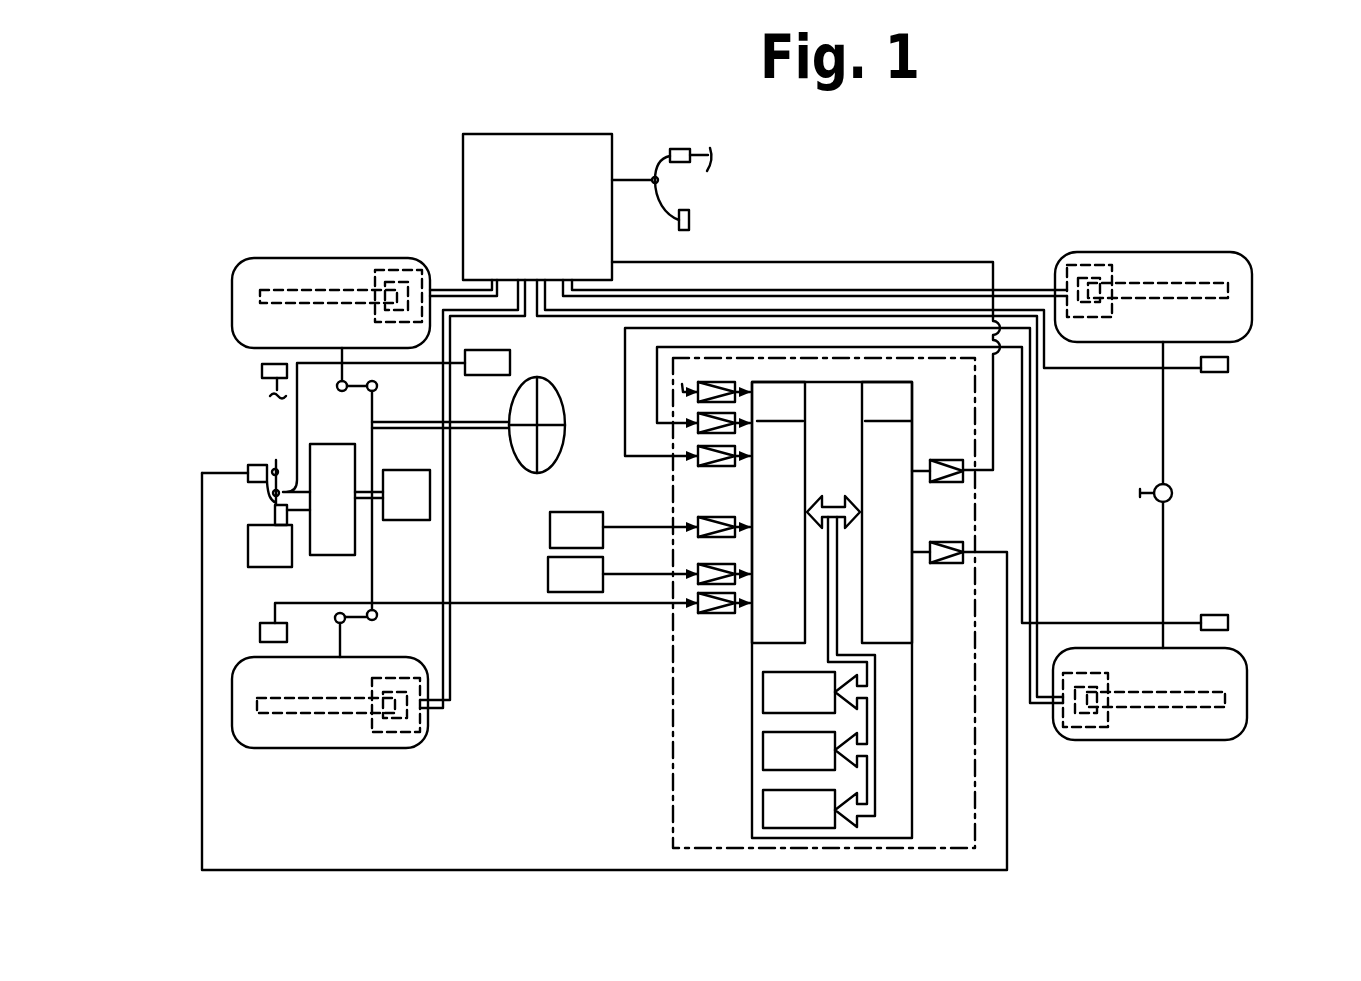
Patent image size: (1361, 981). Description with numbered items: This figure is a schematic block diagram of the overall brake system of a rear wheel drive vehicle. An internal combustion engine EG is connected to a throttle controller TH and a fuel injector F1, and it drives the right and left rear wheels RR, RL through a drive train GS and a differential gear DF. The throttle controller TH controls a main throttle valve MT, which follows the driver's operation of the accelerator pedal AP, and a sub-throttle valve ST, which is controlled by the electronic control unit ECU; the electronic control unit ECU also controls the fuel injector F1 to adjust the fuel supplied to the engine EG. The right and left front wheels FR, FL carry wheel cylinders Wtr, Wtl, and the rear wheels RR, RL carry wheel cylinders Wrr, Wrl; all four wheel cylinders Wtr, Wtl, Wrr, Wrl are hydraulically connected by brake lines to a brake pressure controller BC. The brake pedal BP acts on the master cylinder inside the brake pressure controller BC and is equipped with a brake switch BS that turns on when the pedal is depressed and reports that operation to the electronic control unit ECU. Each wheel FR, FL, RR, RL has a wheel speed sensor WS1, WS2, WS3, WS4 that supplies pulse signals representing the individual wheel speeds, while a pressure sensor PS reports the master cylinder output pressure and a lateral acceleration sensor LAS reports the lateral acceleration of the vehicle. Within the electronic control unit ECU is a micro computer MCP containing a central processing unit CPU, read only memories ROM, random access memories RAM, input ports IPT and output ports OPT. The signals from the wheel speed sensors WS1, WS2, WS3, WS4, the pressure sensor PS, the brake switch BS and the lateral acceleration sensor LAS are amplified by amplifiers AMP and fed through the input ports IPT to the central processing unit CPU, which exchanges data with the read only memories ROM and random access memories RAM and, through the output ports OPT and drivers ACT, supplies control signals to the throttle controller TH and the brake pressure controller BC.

The brake pressure controller BC is at (463, 148).
The brake switch BS is at (680, 148).
The brake pedal BP is at (666, 202).
The right front wheel FR is at (258, 258).
The left front wheel FL is at (318, 748).
The right rear wheel RR is at (1185, 252).
The left rear wheel RL is at (1227, 742).
The right front wheel cylinder Wtr is at (395, 270).
The left front wheel cylinder Wtl is at (407, 728).
The right rear wheel cylinder Wrr is at (1083, 265).
The left rear wheel cylinder Wrl is at (1087, 720).
The wheel speed sensor WS1 is at (260, 636).
The wheel speed sensor WS2 is at (262, 371).
The wheel speed sensor WS3 is at (1216, 615).
The wheel speed sensor WS4 is at (1218, 372).
The amplifier AMP is at (724, 382).
The accelerator pedal AP is at (534, 352).
The throttle controller TH is at (278, 465).
The sub-throttle valve ST is at (248, 467).
The main throttle valve MT is at (270, 495).
The internal combustion engine EG is at (332, 462).
The drive train GS is at (392, 495).
The fuel injector F1 is at (279, 536).
The pressure sensor PS is at (576, 530).
The lateral acceleration sensor LAS is at (575, 575).
The electronic control unit ECU is at (673, 795).
The micro computer MCP is at (921, 610).
The input ports IPT is at (778, 512).
The output ports OPT is at (887, 512).
The central processing unit CPU is at (799, 692).
The read only memories ROM is at (799, 751).
The random access memories RAM is at (799, 809).
The drivers ACT is at (960, 461).
The differential gear DF is at (1172, 493).